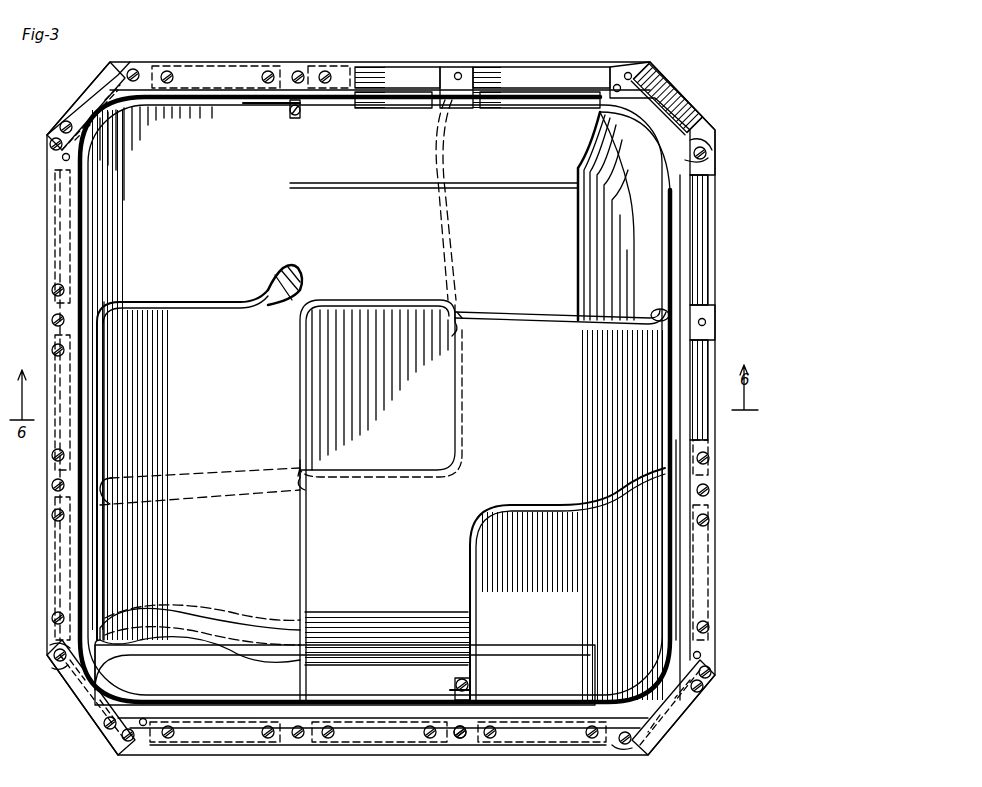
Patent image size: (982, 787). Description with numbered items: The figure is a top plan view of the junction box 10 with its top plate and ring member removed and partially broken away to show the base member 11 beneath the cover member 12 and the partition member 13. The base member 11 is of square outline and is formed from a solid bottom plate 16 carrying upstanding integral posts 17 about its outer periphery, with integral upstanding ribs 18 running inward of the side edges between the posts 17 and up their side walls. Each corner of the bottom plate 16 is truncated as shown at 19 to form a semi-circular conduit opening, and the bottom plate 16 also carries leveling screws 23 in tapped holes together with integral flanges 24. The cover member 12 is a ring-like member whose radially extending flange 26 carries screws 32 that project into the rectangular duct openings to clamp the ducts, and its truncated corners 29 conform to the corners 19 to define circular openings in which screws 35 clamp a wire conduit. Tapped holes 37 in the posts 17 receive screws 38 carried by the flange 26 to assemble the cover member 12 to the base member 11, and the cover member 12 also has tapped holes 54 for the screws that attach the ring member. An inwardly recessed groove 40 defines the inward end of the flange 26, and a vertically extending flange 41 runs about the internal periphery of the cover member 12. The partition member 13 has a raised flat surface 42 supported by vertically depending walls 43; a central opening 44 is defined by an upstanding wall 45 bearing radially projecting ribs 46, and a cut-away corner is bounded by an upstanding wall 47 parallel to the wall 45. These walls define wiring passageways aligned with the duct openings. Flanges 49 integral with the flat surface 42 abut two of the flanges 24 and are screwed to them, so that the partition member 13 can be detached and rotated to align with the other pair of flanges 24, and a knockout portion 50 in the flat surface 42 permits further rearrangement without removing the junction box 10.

The junction box 10 is at (748, 160).
The base member 11 is at (712, 310).
The cover member 12 is at (712, 548).
The partition member 13 is at (560, 480).
The bottom plate 16 is at (660, 582).
The upstanding integral posts 17 is at (465, 68).
The integral upstanding ribs 18 is at (378, 95).
The truncated corner 19 is at (690, 100).
The leveling screws 23 is at (138, 70).
The integral flanges 24 is at (120, 492).
The radially extending flange 26 is at (370, 742).
The truncated corner 29 is at (75, 110).
The screws 32 is at (328, 70).
The screws 35 is at (60, 126).
The tapped holes 37 is at (458, 72).
The screws 38 is at (52, 486).
The inwardly recessed groove 40 is at (90, 272).
The vertically extending flange 41 is at (95, 240).
The raised flat surface 42 is at (188, 315).
The vertically depending walls 43 is at (465, 415).
The central opening 44 is at (445, 390).
The upstanding wall 45 is at (490, 313).
The radially projecting ribs 46 is at (470, 335).
The upstanding wall 47 is at (482, 528).
The flanges 49 is at (288, 125).
The knockout portion 50 is at (275, 278).
The tapped holes 54 is at (62, 157).